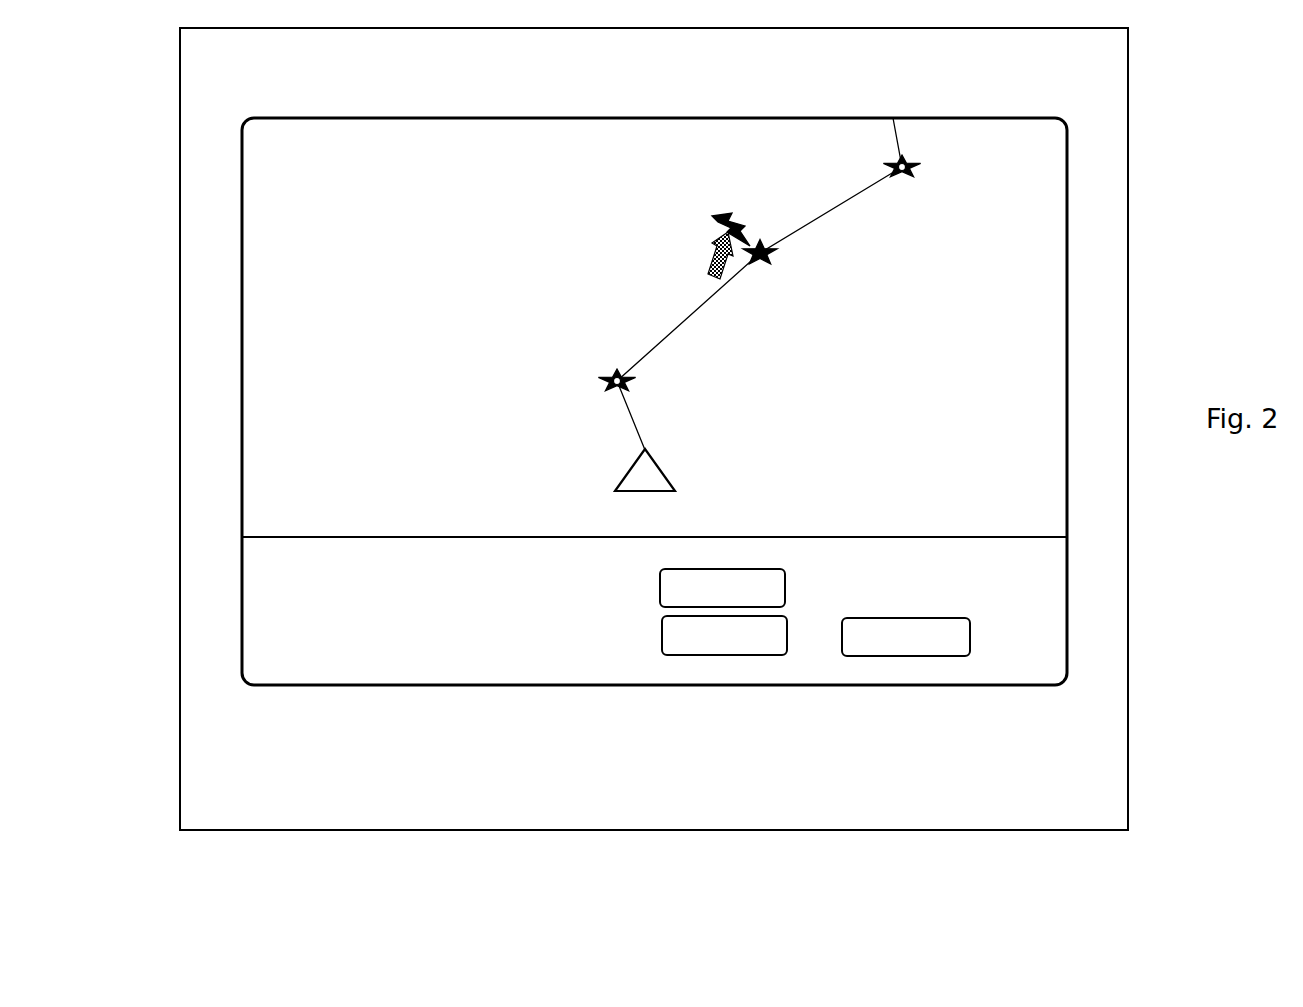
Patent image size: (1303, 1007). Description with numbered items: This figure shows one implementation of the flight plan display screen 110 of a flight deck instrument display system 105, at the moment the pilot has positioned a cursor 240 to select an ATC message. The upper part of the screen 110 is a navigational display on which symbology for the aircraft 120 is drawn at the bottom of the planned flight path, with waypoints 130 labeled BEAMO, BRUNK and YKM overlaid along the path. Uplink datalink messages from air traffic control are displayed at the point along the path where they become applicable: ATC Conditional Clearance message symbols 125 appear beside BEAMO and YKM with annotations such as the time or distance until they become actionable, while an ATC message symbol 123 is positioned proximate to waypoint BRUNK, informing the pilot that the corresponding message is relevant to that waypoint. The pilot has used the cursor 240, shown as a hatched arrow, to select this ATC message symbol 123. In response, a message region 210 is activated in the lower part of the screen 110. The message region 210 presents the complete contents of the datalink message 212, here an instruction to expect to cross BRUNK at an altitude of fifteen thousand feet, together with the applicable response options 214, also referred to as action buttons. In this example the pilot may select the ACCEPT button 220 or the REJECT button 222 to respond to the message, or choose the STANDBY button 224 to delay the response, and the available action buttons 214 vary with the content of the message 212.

The flight deck instrument display system 105 is at (178, 407).
The flight plan display screen 110 is at (240, 186).
The aircraft 120 is at (665, 475).
The ATC message symbol 123 is at (697, 212).
The ATC Conditional Clearance message symbol 125 is at (786, 153).
The waypoint 130 is at (736, 372).
The message region 210 is at (240, 610).
The contents of the datalink message 212 is at (390, 658).
The response options 214 is at (1022, 630).
The ACCEPT action button 220 is at (660, 590).
The REJECT action button 222 is at (662, 645).
The STANDBY action button 224 is at (842, 638).
The cursor 240 is at (716, 246).